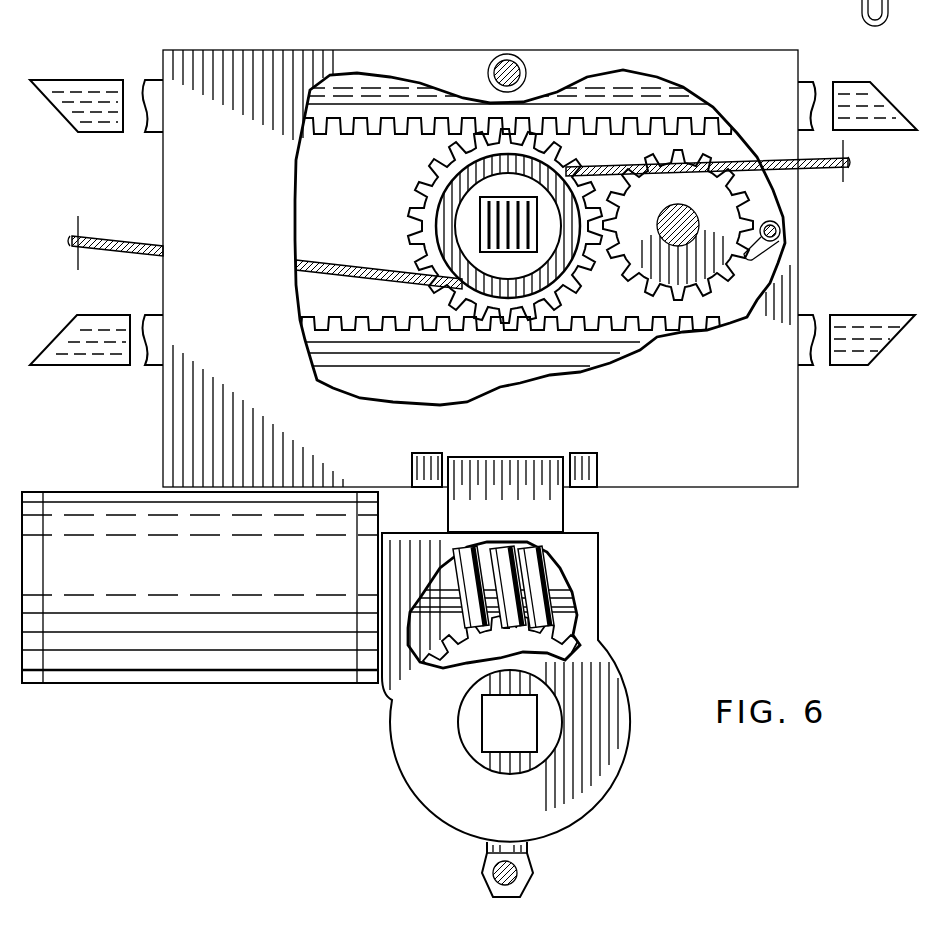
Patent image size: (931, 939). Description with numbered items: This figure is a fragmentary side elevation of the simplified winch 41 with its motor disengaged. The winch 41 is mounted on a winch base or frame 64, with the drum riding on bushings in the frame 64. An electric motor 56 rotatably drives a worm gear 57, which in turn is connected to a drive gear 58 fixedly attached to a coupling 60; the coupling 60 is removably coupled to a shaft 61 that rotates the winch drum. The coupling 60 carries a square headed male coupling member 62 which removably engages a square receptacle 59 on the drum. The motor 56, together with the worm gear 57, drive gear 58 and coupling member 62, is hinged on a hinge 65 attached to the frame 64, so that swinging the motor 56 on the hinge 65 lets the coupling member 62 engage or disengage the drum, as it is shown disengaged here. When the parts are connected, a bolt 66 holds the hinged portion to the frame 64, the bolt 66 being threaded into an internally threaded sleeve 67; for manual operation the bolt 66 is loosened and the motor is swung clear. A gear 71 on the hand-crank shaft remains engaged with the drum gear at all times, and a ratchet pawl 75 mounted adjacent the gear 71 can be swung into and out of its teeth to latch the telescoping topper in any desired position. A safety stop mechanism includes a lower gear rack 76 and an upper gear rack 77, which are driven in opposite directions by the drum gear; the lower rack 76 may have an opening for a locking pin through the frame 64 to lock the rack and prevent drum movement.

The winch 41 is at (730, 566).
The electric motor 56 is at (195, 584).
The worm gear 57 is at (537, 582).
The drive gear 58 is at (560, 630).
The square receptacle 59 is at (497, 255).
The coupling 60 is at (540, 688).
The shaft 61 is at (427, 188).
The square headed male coupling member 62 is at (527, 737).
The frame 64 is at (714, 424).
The hinge 65 is at (496, 462).
The bolt 66 is at (533, 868).
The internally threaded sleeve 67 is at (507, 55).
The gear 71 is at (644, 280).
The ratchet pawl 75 is at (783, 243).
The lower gear rack 76 is at (73, 320).
The upper gear rack 77 is at (88, 127).